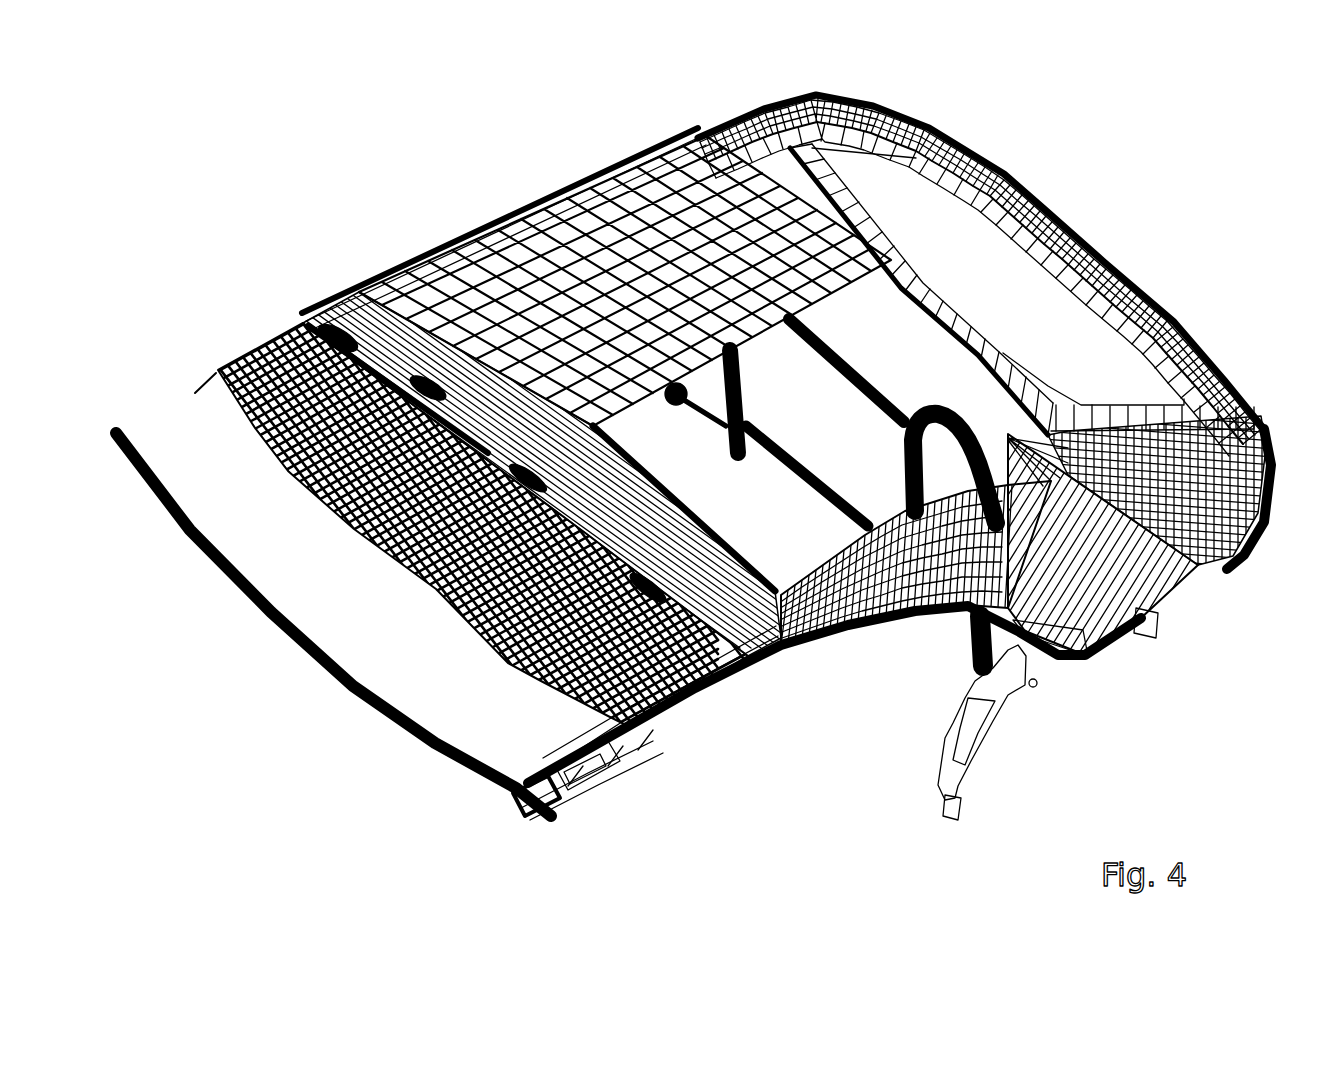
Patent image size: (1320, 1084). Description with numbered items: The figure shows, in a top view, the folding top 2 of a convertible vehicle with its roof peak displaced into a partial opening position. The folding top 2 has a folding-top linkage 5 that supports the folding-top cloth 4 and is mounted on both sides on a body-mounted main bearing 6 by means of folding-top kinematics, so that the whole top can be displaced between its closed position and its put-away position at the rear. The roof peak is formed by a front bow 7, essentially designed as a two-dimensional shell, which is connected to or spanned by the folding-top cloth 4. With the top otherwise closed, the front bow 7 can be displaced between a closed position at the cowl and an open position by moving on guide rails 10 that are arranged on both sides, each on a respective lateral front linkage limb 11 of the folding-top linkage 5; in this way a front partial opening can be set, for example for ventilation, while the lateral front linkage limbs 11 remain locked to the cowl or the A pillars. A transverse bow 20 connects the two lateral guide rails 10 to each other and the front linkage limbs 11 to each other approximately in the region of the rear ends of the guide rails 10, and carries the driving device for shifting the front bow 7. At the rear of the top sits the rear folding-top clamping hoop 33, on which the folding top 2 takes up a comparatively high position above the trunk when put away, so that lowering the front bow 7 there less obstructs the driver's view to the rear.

The folding top 2 is at (400, 218).
The folding-top cloth 4 is at (600, 186).
The transverse bow 20 is at (351, 305).
The front bow 7 is at (480, 637).
The folding-top linkage 5 is at (753, 680).
The guide rail 10 is at (622, 759).
The lateral front linkage limb 11 is at (606, 775).
The main bearing 6 is at (997, 683).
The rear folding-top clamping hoop 33 is at (1220, 548).